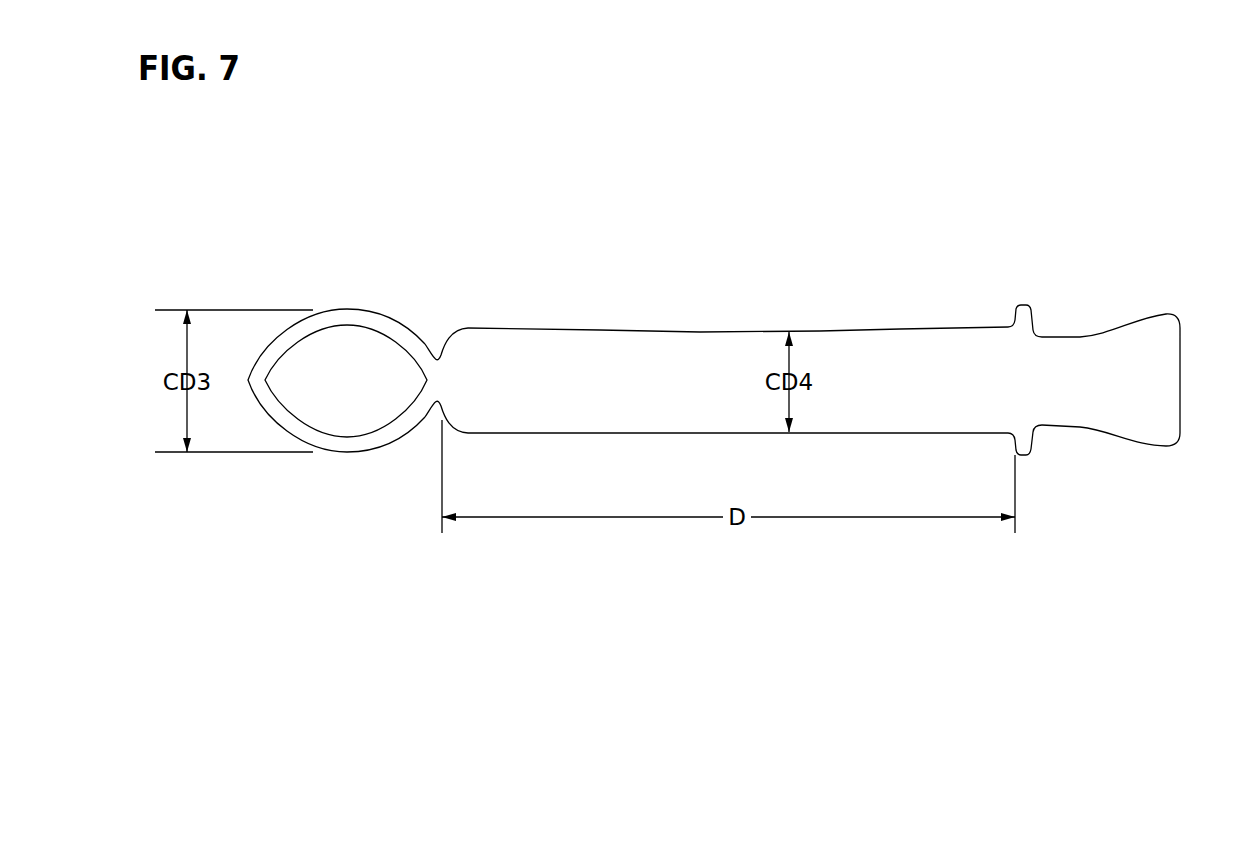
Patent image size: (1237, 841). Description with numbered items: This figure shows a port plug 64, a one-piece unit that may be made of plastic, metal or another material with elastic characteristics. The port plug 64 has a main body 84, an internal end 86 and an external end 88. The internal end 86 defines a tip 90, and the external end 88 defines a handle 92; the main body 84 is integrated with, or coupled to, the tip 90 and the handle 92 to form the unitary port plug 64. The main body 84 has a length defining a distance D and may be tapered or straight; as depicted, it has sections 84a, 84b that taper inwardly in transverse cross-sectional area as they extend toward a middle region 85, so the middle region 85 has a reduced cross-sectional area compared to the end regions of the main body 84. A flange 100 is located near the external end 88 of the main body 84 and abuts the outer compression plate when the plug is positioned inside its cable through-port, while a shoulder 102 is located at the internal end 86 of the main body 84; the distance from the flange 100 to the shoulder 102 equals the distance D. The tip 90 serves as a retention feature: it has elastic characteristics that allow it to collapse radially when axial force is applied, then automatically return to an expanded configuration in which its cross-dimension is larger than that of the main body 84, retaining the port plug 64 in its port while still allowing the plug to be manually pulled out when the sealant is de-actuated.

The port plug 64 is at (1140, 153).
The main body 84 is at (709, 322).
The section of main body 84a is at (482, 327).
The section of main body 84b is at (953, 327).
The middle region 85 is at (688, 332).
The internal end 86 is at (449, 310).
The external end 88 is at (1050, 327).
The tip 90 is at (357, 452).
The handle 92 is at (1152, 447).
The flange 100 is at (1023, 305).
The shoulder 102 is at (435, 342).